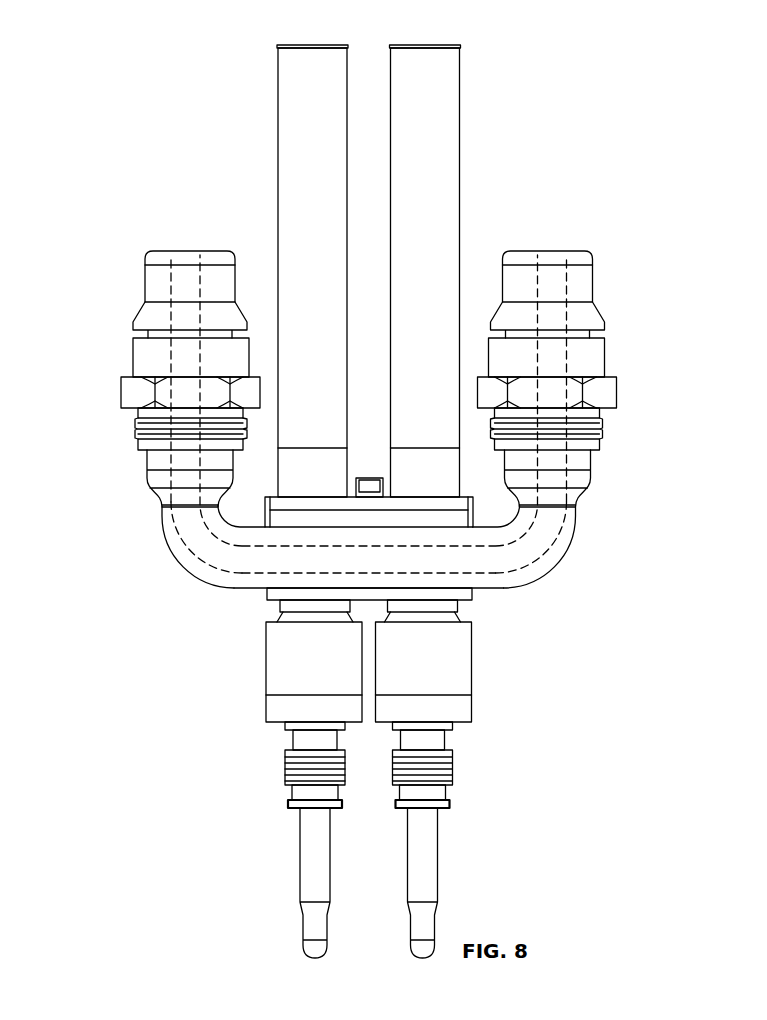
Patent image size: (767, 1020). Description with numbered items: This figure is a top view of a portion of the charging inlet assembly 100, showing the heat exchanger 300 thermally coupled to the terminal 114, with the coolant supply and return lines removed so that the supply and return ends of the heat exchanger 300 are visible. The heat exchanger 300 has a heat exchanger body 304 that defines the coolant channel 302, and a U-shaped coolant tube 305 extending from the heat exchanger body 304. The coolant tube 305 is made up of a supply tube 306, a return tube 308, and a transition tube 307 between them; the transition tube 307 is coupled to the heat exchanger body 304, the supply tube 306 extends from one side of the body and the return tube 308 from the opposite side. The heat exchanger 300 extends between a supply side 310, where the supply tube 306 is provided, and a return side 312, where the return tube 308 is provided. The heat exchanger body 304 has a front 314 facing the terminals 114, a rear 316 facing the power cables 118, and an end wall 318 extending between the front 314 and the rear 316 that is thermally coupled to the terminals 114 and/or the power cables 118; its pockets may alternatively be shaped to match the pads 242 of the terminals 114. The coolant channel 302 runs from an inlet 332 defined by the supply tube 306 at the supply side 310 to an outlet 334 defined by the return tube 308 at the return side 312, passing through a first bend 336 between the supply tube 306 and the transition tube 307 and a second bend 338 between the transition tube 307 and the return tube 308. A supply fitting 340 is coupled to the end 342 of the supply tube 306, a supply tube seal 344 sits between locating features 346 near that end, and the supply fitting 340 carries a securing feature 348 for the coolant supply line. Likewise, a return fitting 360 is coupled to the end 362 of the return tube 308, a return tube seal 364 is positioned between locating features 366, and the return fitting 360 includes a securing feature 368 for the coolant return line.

The charging inlet assembly 100 is at (584, 139).
The terminal 114 is at (308, 852).
The power cable 118 is at (293, 88).
The pad 242 is at (285, 675).
The heat exchanger 300 is at (653, 413).
The coolant channel 302 is at (537, 546).
The heat exchanger body 304 is at (232, 577).
The coolant tube 305 is at (553, 568).
The supply tube 306 is at (568, 523).
The transition tube 307 is at (392, 579).
The return tube 308 is at (178, 520).
The supply side 310 is at (614, 472).
The return side 312 is at (125, 469).
The front 314 is at (277, 602).
The rear 316 is at (262, 492).
The end wall 318 is at (343, 518).
The inlet 332 is at (553, 248).
The outlet 334 is at (185, 248).
The first bend 336 is at (539, 586).
The second bend 338 is at (200, 584).
The supply fitting 340 is at (603, 282).
The end of the supply tube 342 is at (603, 412).
The supply tube seal 344 is at (604, 432).
The locating features 346 is at (604, 447).
The securing feature 348 is at (612, 321).
The return fitting 360 is at (137, 282).
The end of the return tube 362 is at (140, 408).
The return tube seal 364 is at (135, 433).
The locating features 366 is at (134, 446).
The securing feature 368 is at (127, 321).